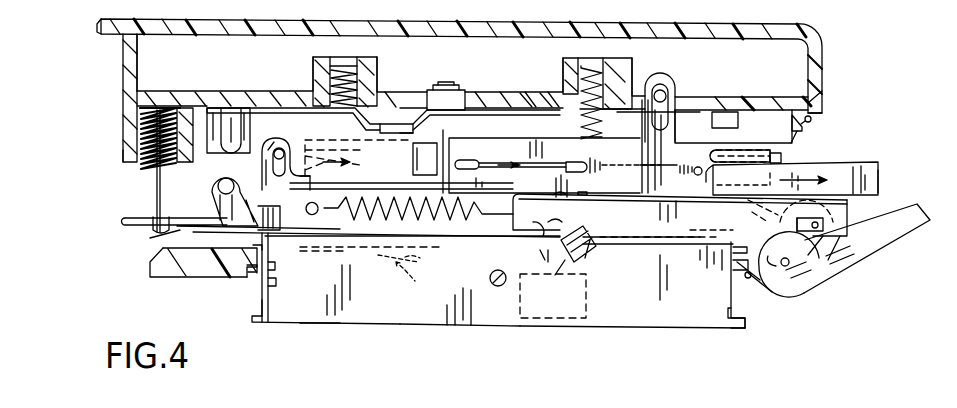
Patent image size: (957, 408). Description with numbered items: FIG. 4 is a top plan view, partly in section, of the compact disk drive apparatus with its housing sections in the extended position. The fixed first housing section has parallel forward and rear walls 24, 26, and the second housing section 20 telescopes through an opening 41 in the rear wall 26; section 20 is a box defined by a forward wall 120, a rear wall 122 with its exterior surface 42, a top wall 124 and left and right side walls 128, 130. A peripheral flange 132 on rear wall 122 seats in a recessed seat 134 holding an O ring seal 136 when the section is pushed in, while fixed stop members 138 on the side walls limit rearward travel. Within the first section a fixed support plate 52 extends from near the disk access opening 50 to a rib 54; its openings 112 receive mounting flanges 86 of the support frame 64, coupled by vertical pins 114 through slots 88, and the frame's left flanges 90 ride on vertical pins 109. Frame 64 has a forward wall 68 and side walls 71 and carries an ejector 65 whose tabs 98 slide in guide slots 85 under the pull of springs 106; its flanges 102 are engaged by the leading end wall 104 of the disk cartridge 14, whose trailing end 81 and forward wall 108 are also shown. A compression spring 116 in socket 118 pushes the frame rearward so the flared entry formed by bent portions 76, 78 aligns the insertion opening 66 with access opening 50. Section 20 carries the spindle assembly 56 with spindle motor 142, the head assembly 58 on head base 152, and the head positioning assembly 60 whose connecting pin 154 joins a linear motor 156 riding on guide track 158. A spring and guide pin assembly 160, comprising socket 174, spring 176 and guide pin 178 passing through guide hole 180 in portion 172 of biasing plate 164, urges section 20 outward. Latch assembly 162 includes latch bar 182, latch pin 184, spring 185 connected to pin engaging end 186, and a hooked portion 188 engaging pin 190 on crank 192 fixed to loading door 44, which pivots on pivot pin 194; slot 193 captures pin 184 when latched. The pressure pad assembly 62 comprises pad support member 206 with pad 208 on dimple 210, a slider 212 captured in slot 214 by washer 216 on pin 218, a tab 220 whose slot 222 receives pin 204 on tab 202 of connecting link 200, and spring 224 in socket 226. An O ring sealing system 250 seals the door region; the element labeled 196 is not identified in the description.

The disk cartridge 14 is at (873, 171).
The second housing section 20 is at (354, 349).
The forward wall 24 is at (712, 28).
The rear wall 26 is at (177, 272).
The opening 41 is at (256, 286).
The exterior surface 42 is at (398, 329).
The disk loading door 44 is at (847, 268).
The disk access opening 50 is at (806, 150).
The internal fixed support member or plate 52 is at (622, 93).
The interior fixed support member or rib 54 is at (132, 77).
The motor driven spindle assembly 56 is at (597, 288).
The magnetic transducer or recording head assembly 58 is at (324, 204).
The linear motor driven head positioning assembly 60 is at (414, 281).
The pressure pad or second head assembly 62 is at (419, 134).
The support frame 64 is at (488, 133).
The disk ejector 65 is at (310, 138).
The disk insertion and withdrawal opening 66 is at (783, 155).
The forward wall 68 is at (728, 147).
The side wall 71 is at (517, 149).
The forwardly bent portion 76 is at (790, 138).
The rearwardly bent portion 78 is at (770, 212).
The trailing end 81 is at (880, 184).
The ejector guide slot 85 is at (530, 170).
The mounting flange 86 is at (676, 130).
The elongated slot 88 is at (648, 113).
The mounting flanges 90 is at (262, 130).
The tabs 98 is at (574, 165).
The inwardly turned flange 102 is at (362, 160).
The leading end wall 104 is at (412, 180).
The helical springs 106 is at (598, 163).
The forward wall of cartridge 108 is at (843, 163).
The vertical pins 109 is at (306, 172).
The complementary openings 112 is at (693, 101).
The vertical pins 114 is at (658, 80).
The helical compression spring 116 is at (581, 124).
The spring receiving socket 118 is at (570, 63).
The forward wall 120 is at (281, 238).
The rear wall 122 is at (520, 332).
The top wall 124 is at (300, 323).
The left side wall 128 is at (265, 298).
The right side wall 130 is at (737, 316).
The peripheral flange 132 is at (254, 318).
The recessed seat 134 is at (232, 283).
The O ring seal 136 is at (270, 283).
The fixed stop member 138 is at (270, 266).
The direct drive electrical spindle motor 142 is at (597, 305).
The head mounting base 152 is at (367, 238).
The connecting pin 154 is at (437, 240).
The linear actuator or motor 156 is at (382, 276).
The head guide track 158 is at (422, 258).
The spring and guide pin assemblies 160 is at (132, 190).
The latch assembly 162 is at (695, 272).
The biasing plate 164 is at (124, 229).
The plate portion 172 is at (146, 269).
The spring retaining socket 174 is at (118, 158).
The helical biasing spring 176 is at (140, 201).
The guide pin 178 is at (181, 235).
The guide hole 180 is at (158, 231).
The latch bar 182 is at (712, 260).
The latch pin 184 is at (494, 288).
The biasing spring 185 is at (461, 181).
The pin engaging end 186 is at (533, 236).
The hooked portion 188 is at (847, 208).
The pin 190 is at (786, 223).
The crank 192 is at (847, 238).
The latching slot or channel 193 is at (557, 238).
The pivot pin 194 is at (789, 264).
The latch member 196 is at (556, 275).
The pressure pad connecting link 200 is at (267, 222).
The tab 202 is at (231, 181).
The connecting pin 204 is at (217, 189).
The pad support member 206 is at (308, 110).
The pressure pad 208 is at (378, 133).
The pad mounting dimple 210 is at (430, 100).
The slider 212 is at (459, 101).
The horizontal slide track or slot 214 is at (522, 101).
The washer 216 is at (428, 87).
The forwardly extending pin 218 is at (450, 90).
The tab 220 is at (206, 118).
The open-ended receiving slot 222 is at (238, 132).
The biasing spring 224 is at (357, 73).
The receiving socket 226 is at (320, 64).
The O ring sealing system 250 is at (814, 121).